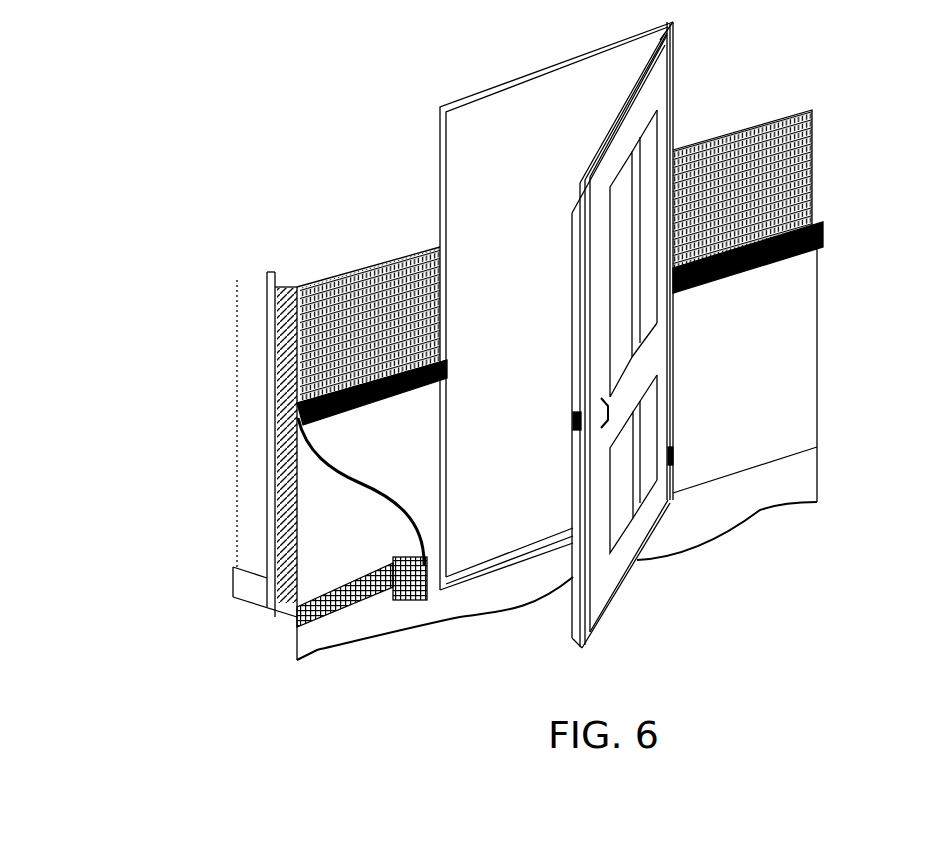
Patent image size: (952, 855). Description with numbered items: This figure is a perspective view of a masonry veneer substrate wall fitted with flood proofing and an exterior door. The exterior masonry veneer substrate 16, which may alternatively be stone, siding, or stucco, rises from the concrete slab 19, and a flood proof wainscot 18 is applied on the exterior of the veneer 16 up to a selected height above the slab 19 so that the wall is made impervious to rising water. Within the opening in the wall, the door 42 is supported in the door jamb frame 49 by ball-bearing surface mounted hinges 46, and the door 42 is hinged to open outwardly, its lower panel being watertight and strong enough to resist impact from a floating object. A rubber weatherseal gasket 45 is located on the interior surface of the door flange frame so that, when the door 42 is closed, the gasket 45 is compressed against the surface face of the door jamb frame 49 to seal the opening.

The exterior masonry veneer substrate 16 is at (303, 313).
The flood proof wainscot 18 is at (390, 461).
The concrete slab 19 is at (735, 502).
The door 42 is at (655, 360).
The rubber weatherseal gasket 45 is at (580, 210).
The hinges 46 is at (673, 95).
The door jamb frame 49 is at (440, 186).